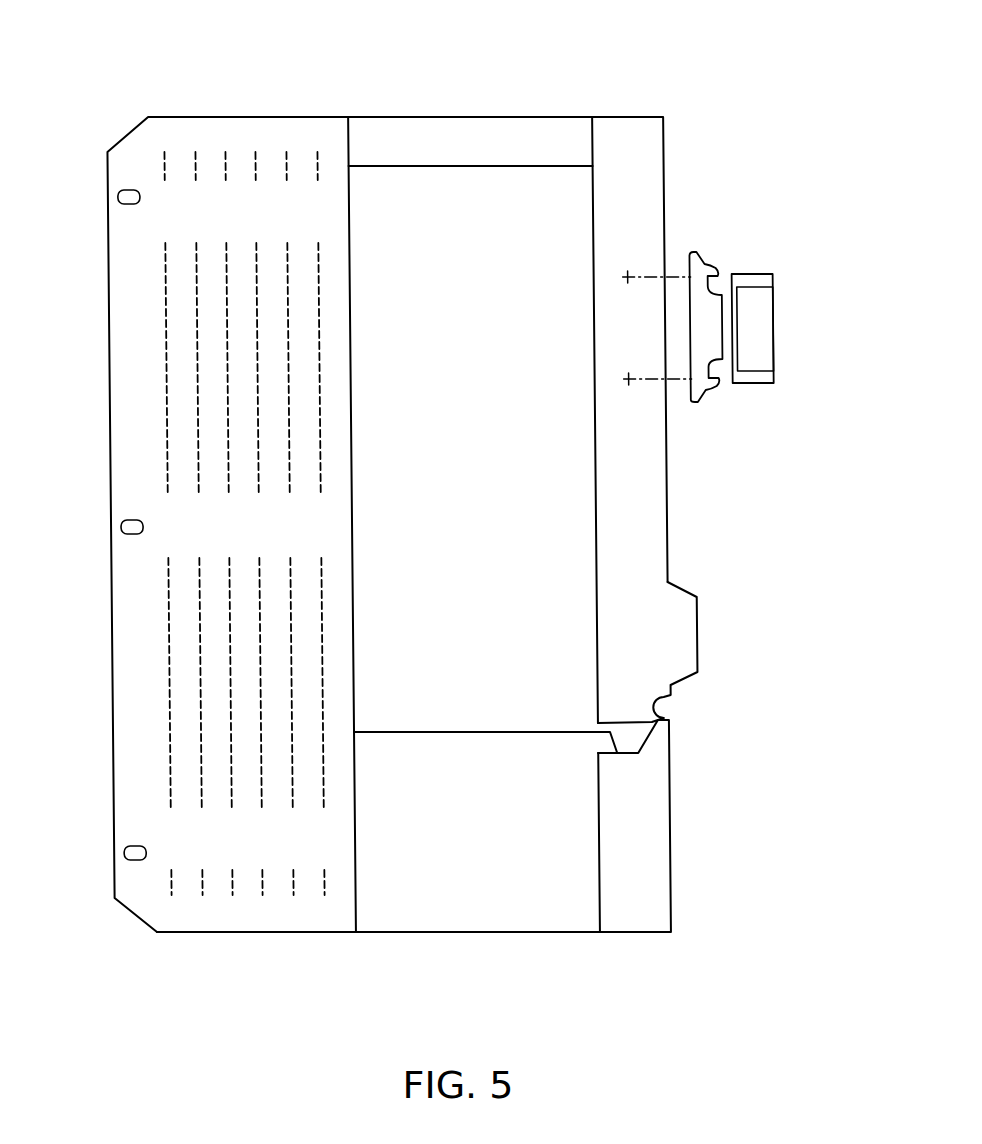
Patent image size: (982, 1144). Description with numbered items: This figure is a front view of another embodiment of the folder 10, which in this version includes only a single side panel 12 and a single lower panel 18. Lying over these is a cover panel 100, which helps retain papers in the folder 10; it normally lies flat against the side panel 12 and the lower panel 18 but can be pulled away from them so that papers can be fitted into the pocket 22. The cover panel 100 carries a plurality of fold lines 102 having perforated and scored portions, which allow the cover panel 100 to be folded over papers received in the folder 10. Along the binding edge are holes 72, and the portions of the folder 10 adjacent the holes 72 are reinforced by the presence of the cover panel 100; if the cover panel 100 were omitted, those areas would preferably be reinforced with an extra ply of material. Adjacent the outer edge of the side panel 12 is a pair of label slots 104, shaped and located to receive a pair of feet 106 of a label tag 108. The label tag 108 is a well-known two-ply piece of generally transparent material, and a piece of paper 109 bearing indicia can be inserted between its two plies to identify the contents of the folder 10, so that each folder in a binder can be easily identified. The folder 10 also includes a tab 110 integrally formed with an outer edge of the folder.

The folder 10 is at (400, 364).
The side panel 12 is at (478, 183).
The lower panel 18 is at (537, 920).
The pocket 22 is at (485, 688).
The holes 72 is at (110, 196).
The cover panel 100 is at (337, 922).
The fold lines 102 is at (204, 892).
The label slots 104 is at (626, 270).
The feet 106 is at (702, 263).
The label tag 108 is at (760, 382).
The piece of paper 109 is at (767, 297).
The tab 110 is at (686, 633).